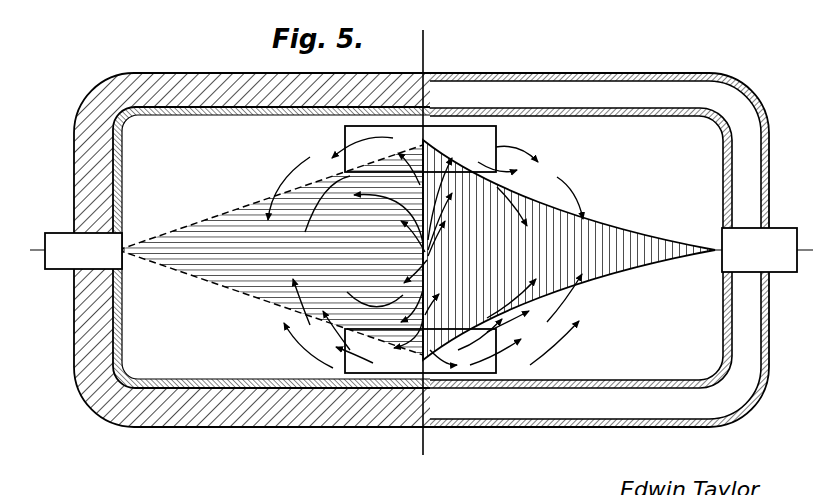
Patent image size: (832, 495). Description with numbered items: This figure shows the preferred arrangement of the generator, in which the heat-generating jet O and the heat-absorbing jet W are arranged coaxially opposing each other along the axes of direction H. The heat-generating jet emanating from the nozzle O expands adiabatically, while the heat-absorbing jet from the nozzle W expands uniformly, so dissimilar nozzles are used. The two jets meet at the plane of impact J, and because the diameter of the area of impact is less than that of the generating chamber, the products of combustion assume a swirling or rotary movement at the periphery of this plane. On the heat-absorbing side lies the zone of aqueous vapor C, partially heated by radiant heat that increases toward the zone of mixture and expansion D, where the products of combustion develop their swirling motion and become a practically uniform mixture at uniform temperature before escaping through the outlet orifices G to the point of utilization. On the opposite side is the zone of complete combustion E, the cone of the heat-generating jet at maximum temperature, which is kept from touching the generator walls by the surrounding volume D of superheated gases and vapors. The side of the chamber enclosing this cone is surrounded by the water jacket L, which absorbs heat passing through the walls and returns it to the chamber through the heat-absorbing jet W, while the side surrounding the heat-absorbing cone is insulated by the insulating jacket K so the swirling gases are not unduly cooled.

The heat-absorbing jet W is at (76, 234).
The heat-generating jet O is at (761, 235).
The insulating jacket K is at (448, 250).
The water jacket L is at (421, 250).
The plane of impact J is at (432, 240).
The outlet orifices G is at (420, 249).
The zone of mixture and expansion D is at (415, 245).
The axes of direction of the jets H is at (421, 250).
The zone of aqueous vapor C is at (272, 252).
The zone of complete combustion E is at (569, 252).